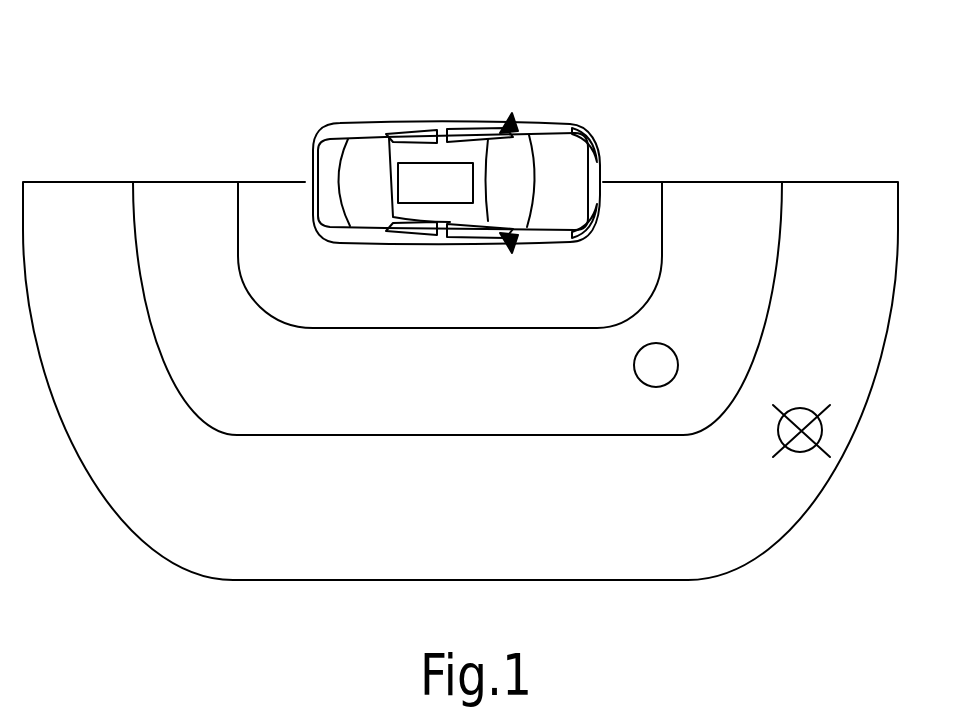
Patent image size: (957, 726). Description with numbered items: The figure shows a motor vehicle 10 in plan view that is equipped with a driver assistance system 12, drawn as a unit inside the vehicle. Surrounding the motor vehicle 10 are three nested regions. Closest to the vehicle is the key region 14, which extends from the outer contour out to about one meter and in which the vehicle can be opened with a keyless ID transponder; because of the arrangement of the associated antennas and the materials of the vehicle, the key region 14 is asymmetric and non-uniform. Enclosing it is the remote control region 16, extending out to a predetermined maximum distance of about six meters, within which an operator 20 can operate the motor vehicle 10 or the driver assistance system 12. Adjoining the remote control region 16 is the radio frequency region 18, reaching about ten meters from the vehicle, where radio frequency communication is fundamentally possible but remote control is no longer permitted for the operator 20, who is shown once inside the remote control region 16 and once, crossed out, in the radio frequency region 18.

The motor vehicle 10 is at (363, 133).
The driver assistance system 12 is at (448, 163).
The key region 14 is at (628, 207).
The remote control region 16 is at (723, 207).
The radio frequency region 18 is at (830, 207).
The operator 20 is at (663, 343).